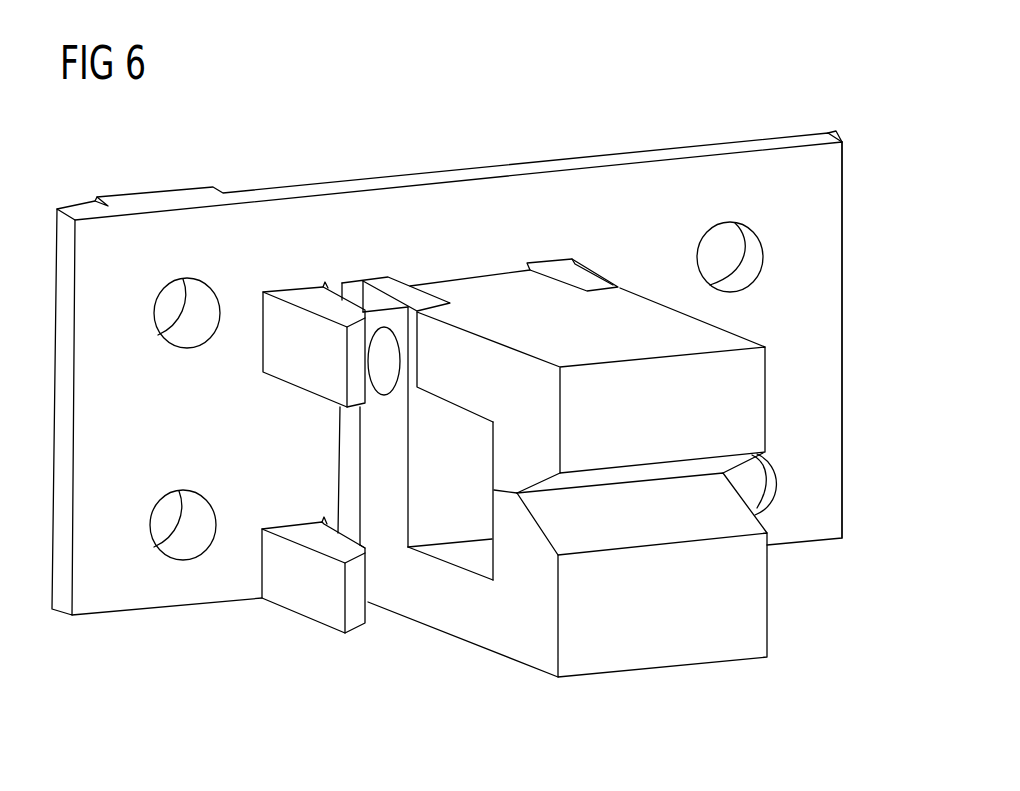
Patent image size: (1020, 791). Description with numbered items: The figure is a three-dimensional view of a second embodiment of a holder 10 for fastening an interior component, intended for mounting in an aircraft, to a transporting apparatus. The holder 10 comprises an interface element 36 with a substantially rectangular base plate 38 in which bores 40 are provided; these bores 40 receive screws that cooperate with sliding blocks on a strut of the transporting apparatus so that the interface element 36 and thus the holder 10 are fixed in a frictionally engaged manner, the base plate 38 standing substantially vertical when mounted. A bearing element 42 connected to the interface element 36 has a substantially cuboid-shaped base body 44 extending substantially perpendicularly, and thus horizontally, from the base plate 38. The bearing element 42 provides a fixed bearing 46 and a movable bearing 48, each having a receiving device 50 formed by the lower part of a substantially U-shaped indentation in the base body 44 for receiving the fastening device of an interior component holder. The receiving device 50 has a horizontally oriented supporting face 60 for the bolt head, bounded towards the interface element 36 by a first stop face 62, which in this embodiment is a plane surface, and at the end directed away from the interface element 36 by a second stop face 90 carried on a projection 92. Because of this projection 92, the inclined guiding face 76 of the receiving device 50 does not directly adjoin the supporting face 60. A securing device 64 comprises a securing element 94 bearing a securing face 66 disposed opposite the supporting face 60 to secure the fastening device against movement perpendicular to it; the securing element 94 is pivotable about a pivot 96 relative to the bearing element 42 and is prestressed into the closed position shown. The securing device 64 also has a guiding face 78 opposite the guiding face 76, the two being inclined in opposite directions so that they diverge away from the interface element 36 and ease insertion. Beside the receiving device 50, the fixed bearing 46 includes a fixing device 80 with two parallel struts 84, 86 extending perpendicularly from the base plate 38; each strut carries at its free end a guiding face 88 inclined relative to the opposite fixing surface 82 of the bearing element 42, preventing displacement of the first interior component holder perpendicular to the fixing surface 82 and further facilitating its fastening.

The holder 10 is at (596, 108).
The interface element 36 is at (148, 174).
The base plate 38 is at (303, 210).
The bores 40 is at (170, 312).
The bearing element 42 is at (800, 606).
The base body 44 is at (753, 587).
The fixed bearing 46 is at (387, 642).
The movable bearing 48 is at (787, 316).
The receiving device 50 is at (494, 562).
The supporting face 60 is at (452, 557).
The first stop face 62 is at (418, 462).
The securing device 64 is at (656, 247).
The securing face 66 is at (462, 410).
The guiding face 76 is at (634, 537).
The guiding face 78 is at (677, 470).
The fixing device 80 is at (287, 662).
The fixing surface 82 is at (512, 652).
The strut 84 is at (296, 602).
The strut 86 is at (298, 370).
The guiding face 88 is at (368, 322).
The second stop face 90 is at (493, 515).
The projection 92 is at (533, 532).
The securing element 94 is at (502, 358).
The pivot 96 is at (393, 362).